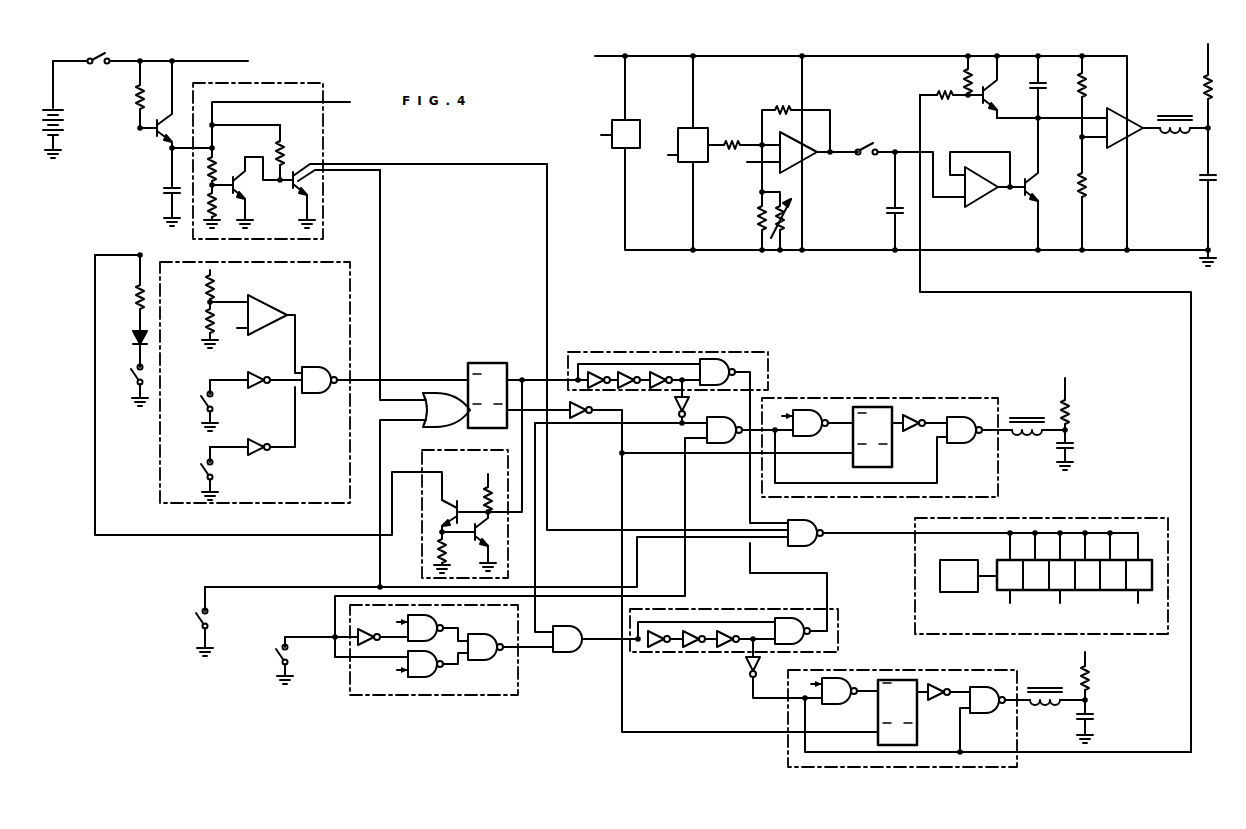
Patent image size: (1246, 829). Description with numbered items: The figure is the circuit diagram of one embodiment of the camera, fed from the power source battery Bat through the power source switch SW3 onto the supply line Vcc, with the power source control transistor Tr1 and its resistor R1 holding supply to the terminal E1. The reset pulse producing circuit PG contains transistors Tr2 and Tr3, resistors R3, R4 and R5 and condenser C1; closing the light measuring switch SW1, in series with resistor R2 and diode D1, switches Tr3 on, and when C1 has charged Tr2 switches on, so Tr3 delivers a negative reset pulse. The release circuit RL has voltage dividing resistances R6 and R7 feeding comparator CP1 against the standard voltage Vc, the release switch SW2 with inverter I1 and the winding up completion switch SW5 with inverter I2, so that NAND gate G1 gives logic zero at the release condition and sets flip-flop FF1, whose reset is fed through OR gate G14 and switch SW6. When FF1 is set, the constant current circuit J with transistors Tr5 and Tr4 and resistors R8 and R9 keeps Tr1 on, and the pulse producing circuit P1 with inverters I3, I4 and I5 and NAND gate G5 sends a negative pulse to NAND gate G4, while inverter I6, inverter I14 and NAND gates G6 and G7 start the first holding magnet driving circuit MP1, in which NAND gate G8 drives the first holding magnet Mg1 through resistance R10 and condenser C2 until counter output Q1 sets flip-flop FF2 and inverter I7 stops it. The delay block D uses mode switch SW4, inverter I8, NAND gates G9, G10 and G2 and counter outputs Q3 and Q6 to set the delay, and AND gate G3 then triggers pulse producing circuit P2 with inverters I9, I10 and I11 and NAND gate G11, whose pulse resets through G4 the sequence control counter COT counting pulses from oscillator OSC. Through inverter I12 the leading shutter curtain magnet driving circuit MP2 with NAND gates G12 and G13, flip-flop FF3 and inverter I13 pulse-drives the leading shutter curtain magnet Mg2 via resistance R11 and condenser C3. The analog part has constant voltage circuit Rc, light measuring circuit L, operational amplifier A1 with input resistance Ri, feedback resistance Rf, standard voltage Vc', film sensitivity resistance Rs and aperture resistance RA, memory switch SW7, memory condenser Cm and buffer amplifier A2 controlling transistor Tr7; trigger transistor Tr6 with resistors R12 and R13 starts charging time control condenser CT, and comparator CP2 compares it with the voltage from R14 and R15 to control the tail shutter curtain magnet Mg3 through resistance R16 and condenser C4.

The power source switch SW3 is at (96, 69).
The supply voltage line Vcc is at (679, 347).
The power source battery Bat is at (66, 109).
The resistor R1 is at (150, 94).
The power source control transistor Tr1 is at (168, 104).
The condenser C1 is at (165, 187).
The reset pulse producing circuit PG is at (316, 84).
The supply terminal E1 is at (208, 270).
The resistor R3 is at (221, 166).
The resistor R4 is at (219, 206).
The resistor R5 is at (289, 152).
The transistor Tr2 is at (239, 192).
The transistor Tr3 is at (411, 196).
The release circuit block RL is at (348, 262).
The resistor R2 is at (129, 293).
The diode D1 is at (130, 347).
The light measuring switch SW1 is at (126, 385).
The voltage dividing resistance R6 is at (219, 286).
The voltage dividing resistance R7 is at (202, 325).
The comparator CP1 is at (252, 311).
The standard voltage Vc is at (449, 232).
The inverter I1 is at (256, 372).
The release switch SW2 is at (222, 405).
The inverter I2 is at (252, 439).
The winding up completion switch SW5 is at (222, 473).
The NAND gate G1 is at (385, 380).
The flip-flop FF1 is at (488, 363).
The OR gate G14 is at (446, 410).
The constant current circuit J is at (422, 454).
The transistor Tr5 is at (452, 516).
The resistor R8 is at (477, 493).
The resistor R9 is at (449, 552).
The transistor Tr4 is at (477, 541).
The switch SW6 is at (218, 621).
The mode switch SW4 is at (298, 660).
The delay block D is at (518, 688).
The inverter I8 is at (382, 630).
The counter output Q3 is at (725, 611).
The counter output Q6 is at (764, 635).
The NAND gate G9 is at (438, 628).
The NAND gate G10 is at (438, 664).
The NAND gate G2 is at (510, 647).
The AND gate G3 is at (595, 639).
The pulse producing circuit P2 is at (728, 609).
The inverter I9 is at (665, 651).
The inverter I10 is at (699, 651).
The inverter I11 is at (745, 651).
The NAND gate G11 is at (801, 631).
The inverter I12 is at (763, 661).
The NAND gate G12 is at (850, 691).
The counter output Q1 is at (893, 551).
The leading shutter curtain magnet driving circuit MP2 is at (788, 753).
The flip-flop FF3 is at (886, 680).
The inverter I13 is at (949, 700).
The NAND gate G13 is at (1000, 700).
The leading shutter curtain magnet Mg2 is at (1056, 686).
The resistance R11 is at (1098, 681).
The condenser C3 is at (1094, 721).
The pulse producing circuit P1 is at (745, 352).
The inverter I3 is at (594, 372).
The inverter I4 is at (624, 372).
The inverter I5 is at (656, 372).
The NAND gate G5 is at (744, 441).
The inverter I6 is at (674, 401).
The inverter I14 is at (595, 419).
The NAND gate G6 is at (750, 430).
The NAND gate G7 is at (823, 423).
The first holding magnet driving circuit MP1 is at (948, 398).
The flip-flop FF2 is at (872, 407).
The inverter I7 is at (925, 432).
The NAND gate G8 is at (979, 430).
The first holding magnet Mg1 is at (1037, 415).
The resistance R10 is at (1078, 413).
The condenser C2 is at (1074, 450).
The NAND gate G4 is at (963, 540).
The counter COT is at (915, 594).
The pulse producing circuit OSC is at (968, 576).
The constant voltage circuit Rc is at (626, 134).
The light measuring circuit L is at (693, 145).
The input resistance Ri is at (744, 134).
The feedback resistance Rf is at (796, 120).
The operational amplifier A1 is at (819, 152).
The standard voltage Vc' is at (754, 164).
The memory switch SW7 is at (872, 141).
The film sensitivity setting variable resistance Rs is at (751, 197).
The aperture value setting variable resistance RA is at (793, 218).
The memory condenser Cm is at (884, 201).
The resistor R13 is at (981, 75).
The resistor R12 is at (944, 104).
The trigger switching transistor Tr6 is at (994, 87).
The time control condenser CT is at (1047, 87).
The transistor Tr7 is at (1036, 184).
The buffer operational amplifier A2 is at (995, 187).
The resistor R14 is at (1096, 96).
The resistor R15 is at (1096, 193).
The comparator CP2 is at (1128, 147).
The tail shutter curtain magnet Mg3 is at (1183, 112).
The resistance R16 is at (1221, 100).
The condenser C4 is at (1216, 197).